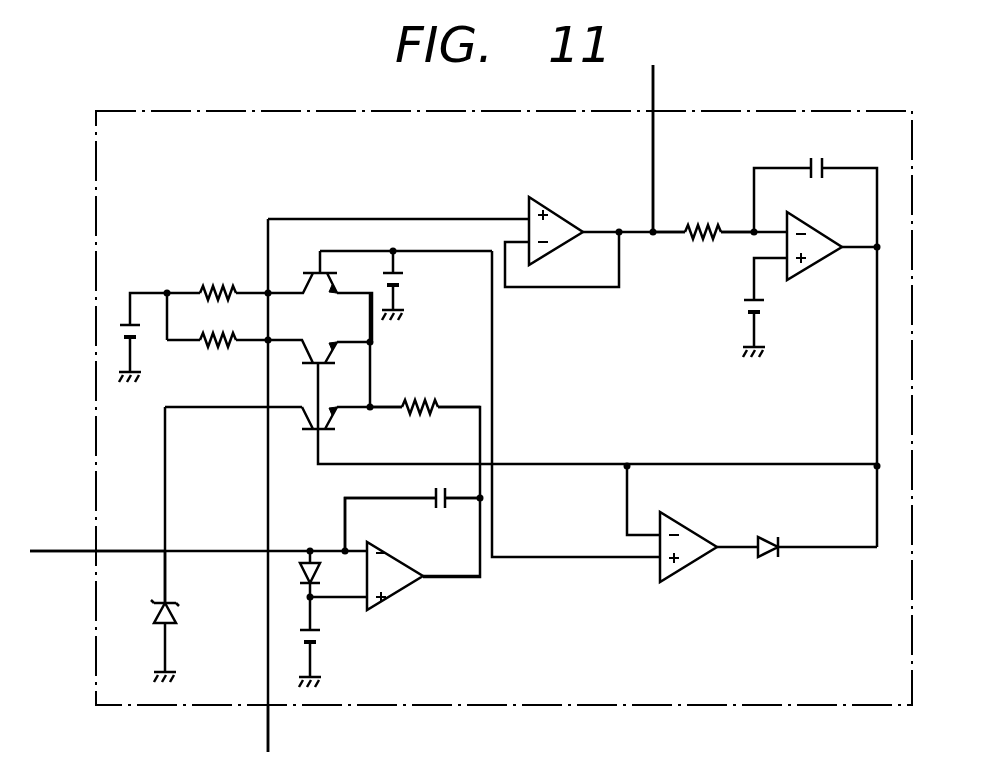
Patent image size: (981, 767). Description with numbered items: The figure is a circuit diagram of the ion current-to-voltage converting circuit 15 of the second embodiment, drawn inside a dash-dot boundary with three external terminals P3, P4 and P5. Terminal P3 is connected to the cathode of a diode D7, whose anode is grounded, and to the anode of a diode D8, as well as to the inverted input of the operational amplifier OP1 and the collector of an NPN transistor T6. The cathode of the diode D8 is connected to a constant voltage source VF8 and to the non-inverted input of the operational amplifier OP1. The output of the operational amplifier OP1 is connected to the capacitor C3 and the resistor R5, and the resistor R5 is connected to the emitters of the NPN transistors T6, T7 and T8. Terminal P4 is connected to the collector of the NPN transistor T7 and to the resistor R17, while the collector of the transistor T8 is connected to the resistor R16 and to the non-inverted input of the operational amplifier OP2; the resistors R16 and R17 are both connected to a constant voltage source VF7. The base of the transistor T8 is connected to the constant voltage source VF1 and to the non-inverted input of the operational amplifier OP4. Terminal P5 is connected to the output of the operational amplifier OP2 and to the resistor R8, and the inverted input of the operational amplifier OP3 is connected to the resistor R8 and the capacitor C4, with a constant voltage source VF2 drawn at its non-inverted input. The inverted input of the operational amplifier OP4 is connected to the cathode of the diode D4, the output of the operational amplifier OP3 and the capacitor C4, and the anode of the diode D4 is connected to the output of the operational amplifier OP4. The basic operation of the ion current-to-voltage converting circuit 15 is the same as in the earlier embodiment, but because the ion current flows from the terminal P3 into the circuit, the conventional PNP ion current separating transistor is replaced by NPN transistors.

The ion current-to-voltage converting circuit 15 is at (865, 111).
The terminal P3 is at (66, 548).
The terminal P4 is at (270, 742).
The terminal P5 is at (656, 93).
The constant voltage source VF7 is at (118, 308).
The constant voltage source VF1 is at (407, 283).
The constant voltage source VF2 is at (770, 312).
The constant voltage source VF8 is at (318, 641).
The resistor R16 is at (219, 278).
The resistor R17 is at (212, 357).
The resistor R5 is at (419, 395).
The resistor R8 is at (703, 219).
The NPN transistor T8 is at (293, 277).
The NPN transistor T7 is at (303, 358).
The NPN transistor T6 is at (309, 438).
The operational amplifier OP1 is at (394, 560).
The operational amplifier OP2 is at (561, 216).
The operational amplifier OP3 is at (817, 234).
The operational amplifier OP4 is at (690, 530).
The capacitor C3 is at (432, 483).
The capacitor C4 is at (815, 187).
The diode D4 is at (767, 536).
The diode D7 is at (176, 611).
The diode D8 is at (304, 549).